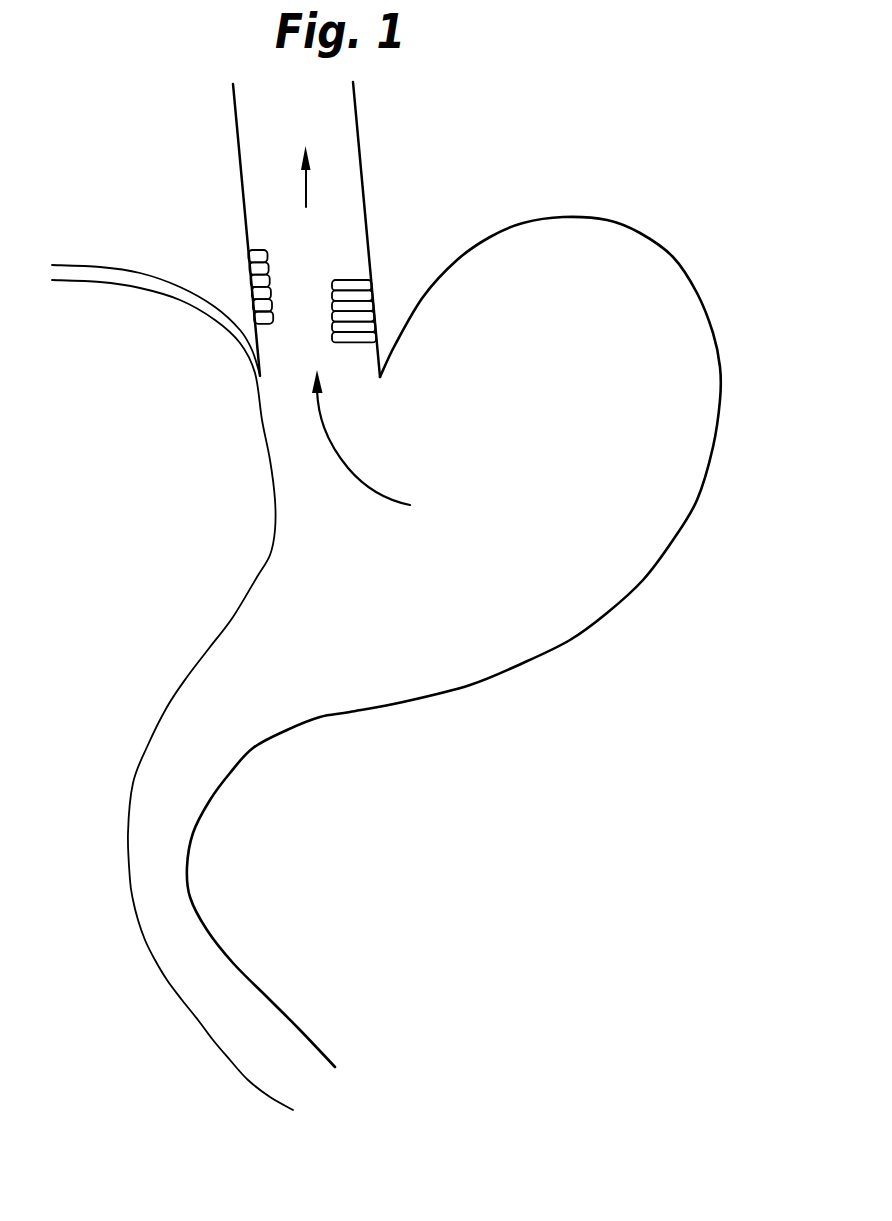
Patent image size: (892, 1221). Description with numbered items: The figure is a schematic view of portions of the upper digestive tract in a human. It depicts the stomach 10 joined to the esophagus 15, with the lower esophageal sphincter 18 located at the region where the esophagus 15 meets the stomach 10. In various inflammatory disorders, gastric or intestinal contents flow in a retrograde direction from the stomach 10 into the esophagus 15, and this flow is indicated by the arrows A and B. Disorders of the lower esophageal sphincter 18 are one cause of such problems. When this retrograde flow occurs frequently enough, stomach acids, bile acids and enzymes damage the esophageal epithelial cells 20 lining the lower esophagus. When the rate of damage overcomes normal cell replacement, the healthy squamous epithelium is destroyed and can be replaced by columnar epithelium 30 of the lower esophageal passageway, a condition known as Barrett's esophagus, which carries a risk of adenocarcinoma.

The stomach 10 is at (663, 487).
The esophagus 15 is at (360, 137).
The lower esophageal sphincter 18 is at (298, 392).
The esophageal epithelial cells 20 is at (265, 275).
The columnar epithelium 30 is at (333, 305).
The arrow A is at (307, 202).
The arrow B is at (323, 425).